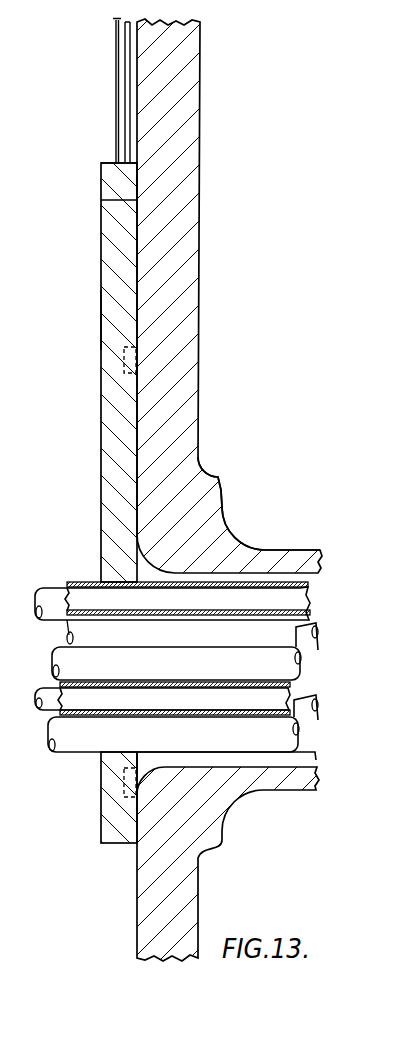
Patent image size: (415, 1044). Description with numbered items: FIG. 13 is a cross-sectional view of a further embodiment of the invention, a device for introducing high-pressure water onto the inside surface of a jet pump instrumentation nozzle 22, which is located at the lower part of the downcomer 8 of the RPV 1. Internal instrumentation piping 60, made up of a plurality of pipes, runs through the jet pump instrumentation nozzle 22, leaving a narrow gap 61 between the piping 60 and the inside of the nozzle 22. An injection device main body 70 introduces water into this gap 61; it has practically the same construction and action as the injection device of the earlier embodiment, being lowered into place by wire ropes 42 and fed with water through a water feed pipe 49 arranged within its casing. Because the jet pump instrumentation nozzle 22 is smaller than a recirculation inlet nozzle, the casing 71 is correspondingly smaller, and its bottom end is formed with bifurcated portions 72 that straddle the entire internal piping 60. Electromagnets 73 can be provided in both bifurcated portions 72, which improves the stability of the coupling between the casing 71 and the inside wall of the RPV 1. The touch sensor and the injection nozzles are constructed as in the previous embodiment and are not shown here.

The RPV 1 is at (198, 103).
The downcomer 8 is at (100, 182).
The jet pump instrumentation nozzle 22 is at (220, 488).
The wire ropes 42 is at (115, 33).
The water feed pipe 49 is at (126, 70).
The internal instrumentation piping 60 is at (73, 753).
The gap 61 is at (257, 757).
The injection device main body 70 is at (100, 250).
The casing 71 is at (100, 328).
The bifurcated portions 72 is at (100, 800).
The electromagnets 73 is at (125, 365).